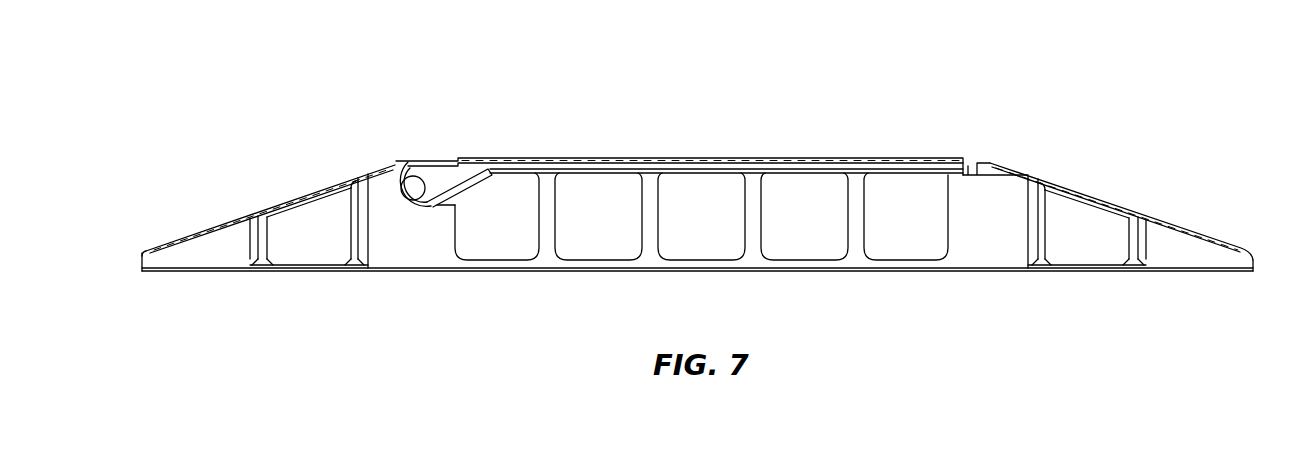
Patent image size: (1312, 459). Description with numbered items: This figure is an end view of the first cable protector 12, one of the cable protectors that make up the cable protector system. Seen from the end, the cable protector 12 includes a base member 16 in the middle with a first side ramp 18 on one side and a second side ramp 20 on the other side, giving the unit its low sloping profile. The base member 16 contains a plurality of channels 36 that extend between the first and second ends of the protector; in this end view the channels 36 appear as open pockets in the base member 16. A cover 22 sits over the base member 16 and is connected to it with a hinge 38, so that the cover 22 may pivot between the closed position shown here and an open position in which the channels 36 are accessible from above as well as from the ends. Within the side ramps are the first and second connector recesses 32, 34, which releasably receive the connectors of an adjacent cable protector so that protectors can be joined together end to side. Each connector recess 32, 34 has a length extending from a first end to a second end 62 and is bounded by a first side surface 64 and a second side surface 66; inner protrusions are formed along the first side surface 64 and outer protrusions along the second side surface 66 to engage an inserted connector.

The first cable protector 12 is at (843, 108).
The base member 16 is at (868, 282).
The first side ramp 18 is at (1240, 250).
The second side ramp 20 is at (141, 254).
The cover 22 is at (628, 158).
The first connector recess 32 is at (1110, 261).
The second connector recess 34 is at (290, 258).
The channels 36 is at (682, 238).
The hinge 38 is at (413, 176).
The second end 62 is at (333, 250).
The first side surface 64 is at (345, 222).
The second side surface 66 is at (265, 232).